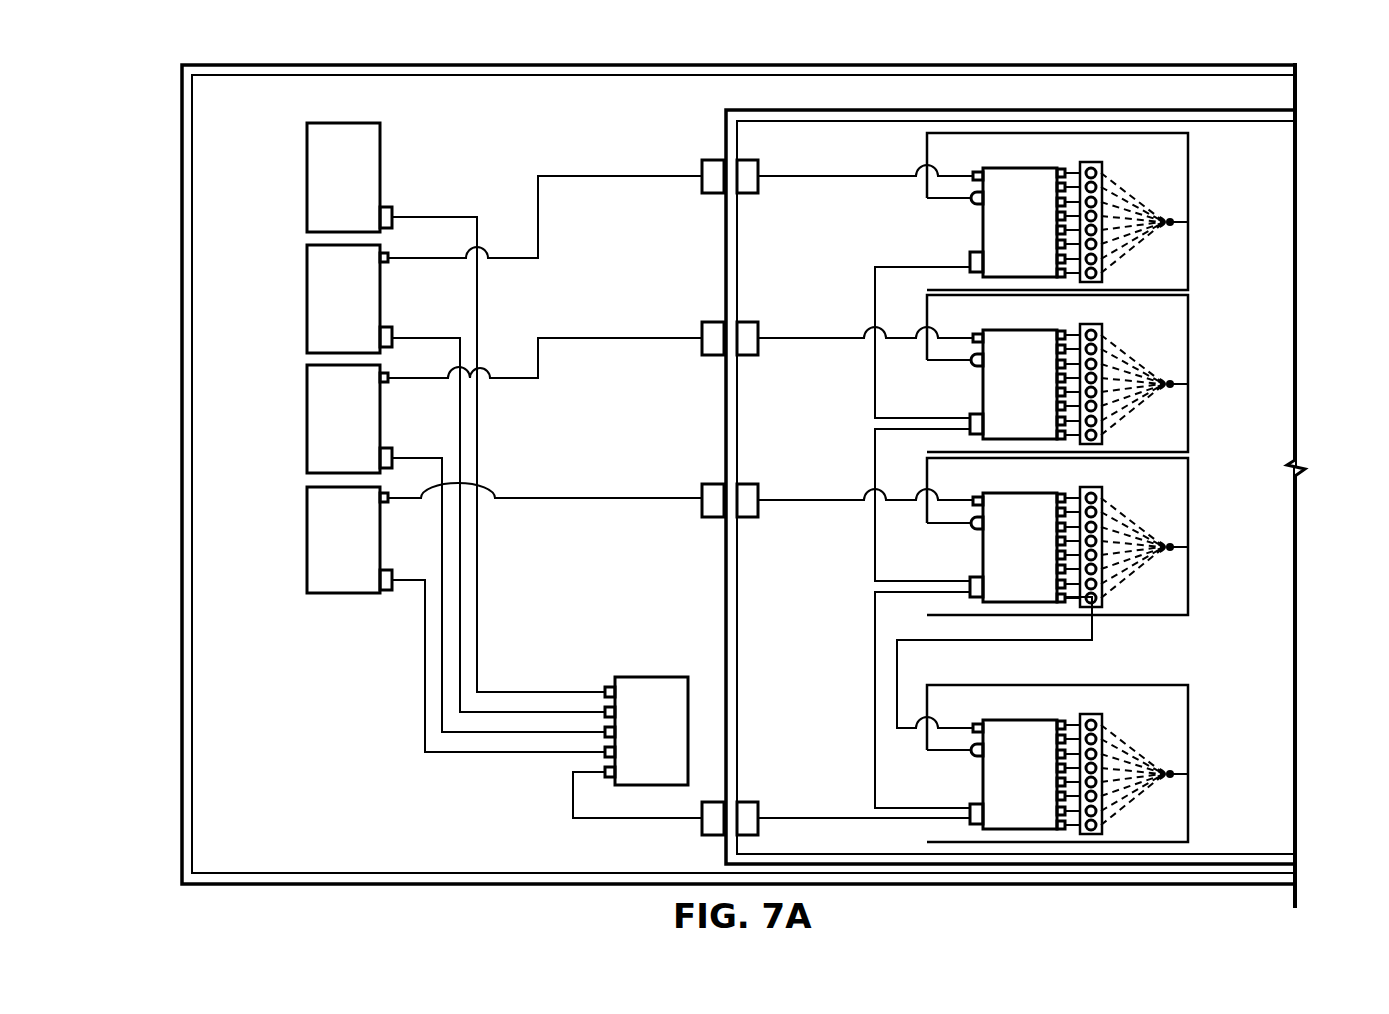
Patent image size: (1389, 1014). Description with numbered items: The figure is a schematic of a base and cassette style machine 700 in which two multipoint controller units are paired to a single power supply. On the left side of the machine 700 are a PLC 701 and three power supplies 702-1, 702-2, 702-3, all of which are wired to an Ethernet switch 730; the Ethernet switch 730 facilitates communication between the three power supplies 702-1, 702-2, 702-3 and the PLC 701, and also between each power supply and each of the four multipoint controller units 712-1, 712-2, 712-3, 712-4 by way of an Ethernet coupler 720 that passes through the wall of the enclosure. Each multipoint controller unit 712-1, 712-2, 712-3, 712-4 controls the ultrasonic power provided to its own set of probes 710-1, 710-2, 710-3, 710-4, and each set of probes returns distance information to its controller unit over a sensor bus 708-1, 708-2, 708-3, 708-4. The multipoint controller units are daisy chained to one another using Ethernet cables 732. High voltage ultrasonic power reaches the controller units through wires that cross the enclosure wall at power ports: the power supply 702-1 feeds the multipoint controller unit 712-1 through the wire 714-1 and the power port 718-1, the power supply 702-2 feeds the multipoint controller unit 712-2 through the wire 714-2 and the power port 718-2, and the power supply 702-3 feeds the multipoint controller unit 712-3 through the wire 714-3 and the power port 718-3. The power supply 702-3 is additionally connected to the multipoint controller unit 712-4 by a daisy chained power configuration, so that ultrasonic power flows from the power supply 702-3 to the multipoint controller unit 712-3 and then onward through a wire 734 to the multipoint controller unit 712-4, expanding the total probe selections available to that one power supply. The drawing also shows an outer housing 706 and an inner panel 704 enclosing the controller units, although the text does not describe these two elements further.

The base and cassette style machine 700 is at (143, 52).
The PLC 701 is at (307, 135).
The power supply 702-1 is at (307, 256).
The power supply 702-2 is at (307, 376).
The power supply 702-3 is at (307, 496).
The enclosure panel 704 is at (1293, 110).
The housing 706 is at (1293, 66).
The sensor bus 708-1 is at (1188, 176).
The sensor bus 708-2 is at (1109, 373).
The sensor bus 708-3 is at (1109, 536).
The sensor bus 708-4 is at (1109, 763).
The set of probes 710-1 is at (1098, 162).
The set of probes 710-2 is at (1134, 371).
The set of probes 710-3 is at (1134, 534).
The set of probes 710-4 is at (1134, 761).
The multipoint controller unit 712-1 is at (1016, 168).
The multipoint controller unit 712-2 is at (1012, 369).
The multipoint controller unit 712-3 is at (1012, 532).
The multipoint controller unit 712-4 is at (1012, 759).
The wire 714-1 is at (644, 176).
The wire 714-2 is at (644, 338).
The wire 714-3 is at (644, 500).
The power port 718-1 is at (697, 194).
The power port 718-2 is at (697, 356).
The power port 718-3 is at (697, 518).
The RJ-45 coupler 720 is at (697, 834).
The Ethernet switch 730 is at (627, 677).
The Ethernet cables 732 is at (875, 384).
The wire 734 is at (1094, 640).